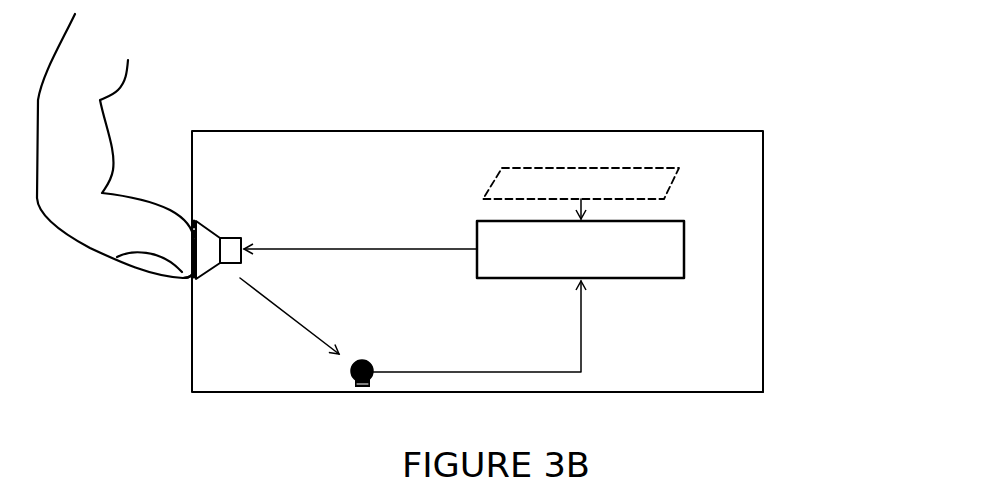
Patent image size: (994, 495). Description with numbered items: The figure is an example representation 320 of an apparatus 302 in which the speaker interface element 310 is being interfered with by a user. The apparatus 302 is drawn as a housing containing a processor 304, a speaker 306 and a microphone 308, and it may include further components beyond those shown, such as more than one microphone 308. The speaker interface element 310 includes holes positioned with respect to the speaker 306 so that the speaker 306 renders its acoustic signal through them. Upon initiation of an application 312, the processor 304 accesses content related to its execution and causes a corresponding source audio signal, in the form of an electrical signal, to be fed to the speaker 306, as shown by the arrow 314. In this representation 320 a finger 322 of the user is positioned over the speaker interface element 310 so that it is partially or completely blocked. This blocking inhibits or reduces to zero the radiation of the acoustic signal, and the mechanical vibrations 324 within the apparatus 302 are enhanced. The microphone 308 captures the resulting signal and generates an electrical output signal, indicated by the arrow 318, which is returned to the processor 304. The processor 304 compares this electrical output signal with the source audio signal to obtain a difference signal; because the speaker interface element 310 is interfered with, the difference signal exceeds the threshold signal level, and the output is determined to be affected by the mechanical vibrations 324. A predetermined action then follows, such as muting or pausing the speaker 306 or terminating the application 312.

The apparatus 302 is at (763, 193).
The processor 304 is at (684, 250).
The speaker 306 is at (215, 233).
The microphone 308 is at (350, 373).
The speaker interface element 310 is at (193, 279).
The application 312 is at (670, 186).
The arrow 314 is at (410, 249).
The arrow 318 is at (581, 335).
The example representation 320 is at (664, 412).
The finger 322 is at (126, 86).
The mechanical vibrations 324 is at (288, 302).